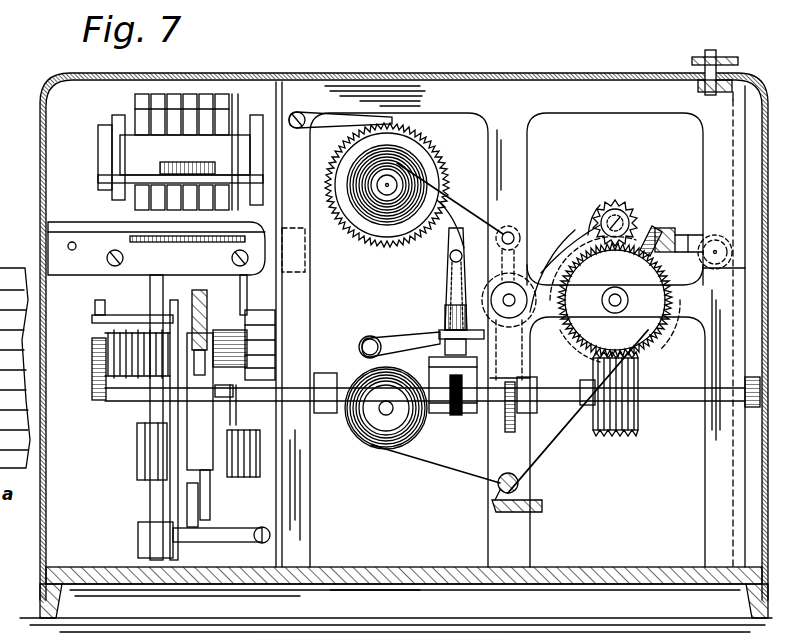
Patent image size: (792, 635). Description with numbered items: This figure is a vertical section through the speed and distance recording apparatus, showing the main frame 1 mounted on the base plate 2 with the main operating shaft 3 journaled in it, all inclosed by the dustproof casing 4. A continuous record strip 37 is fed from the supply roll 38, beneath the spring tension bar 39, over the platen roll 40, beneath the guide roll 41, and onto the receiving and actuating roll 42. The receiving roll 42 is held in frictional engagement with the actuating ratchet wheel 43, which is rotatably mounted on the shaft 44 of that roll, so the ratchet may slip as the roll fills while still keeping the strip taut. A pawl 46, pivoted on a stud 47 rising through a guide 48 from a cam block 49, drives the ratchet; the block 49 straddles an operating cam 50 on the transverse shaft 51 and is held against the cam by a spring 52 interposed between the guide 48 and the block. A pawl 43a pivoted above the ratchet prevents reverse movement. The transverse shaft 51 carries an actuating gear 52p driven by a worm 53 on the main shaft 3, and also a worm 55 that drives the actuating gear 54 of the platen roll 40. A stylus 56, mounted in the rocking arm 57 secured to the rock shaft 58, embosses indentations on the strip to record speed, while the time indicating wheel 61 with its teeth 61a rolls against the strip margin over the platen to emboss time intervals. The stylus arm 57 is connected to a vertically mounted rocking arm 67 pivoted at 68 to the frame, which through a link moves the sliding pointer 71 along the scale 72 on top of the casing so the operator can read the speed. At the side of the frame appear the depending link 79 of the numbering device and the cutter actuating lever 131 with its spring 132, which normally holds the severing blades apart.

The main frame 1 is at (515, 146).
The base plate 2 is at (400, 574).
The main operating shaft 3 is at (513, 304).
The casing 4 is at (44, 437).
The record strip 37 is at (553, 432).
The supply roll 38 is at (386, 415).
The spring tension bar 39 is at (520, 487).
The platen roll 40 is at (638, 350).
The guide roll 41 is at (516, 231).
The receiving and actuating roll 42 is at (375, 197).
The actuating ratchet wheel 43 is at (434, 149).
The pawl 43a is at (342, 114).
The shaft 44 is at (387, 197).
The pawl 46 is at (457, 228).
The stud 47 is at (449, 318).
The guide 48 is at (439, 335).
The cam block 49 is at (442, 412).
The operating cam 50 is at (455, 412).
The transverse shaft 51 is at (672, 392).
The spring 52 is at (360, 347).
The actuating gear 52p is at (476, 472).
The worm 53 is at (504, 288).
The actuating gear 54 is at (648, 338).
The worm 55 is at (620, 432).
The stylus 56 is at (652, 238).
The rocking arm 57 is at (680, 238).
The rock shaft 58 is at (714, 262).
The time indicating wheel 61 is at (624, 214).
The teeth 61a is at (600, 205).
The rocking arm 67 is at (733, 144).
The pivot 68 is at (720, 400).
The sliding pointer 71 is at (711, 52).
The scale 72 is at (736, 62).
The depending link 79 is at (240, 302).
The cutter actuating lever 131 is at (221, 477).
The spring 132 is at (265, 496).